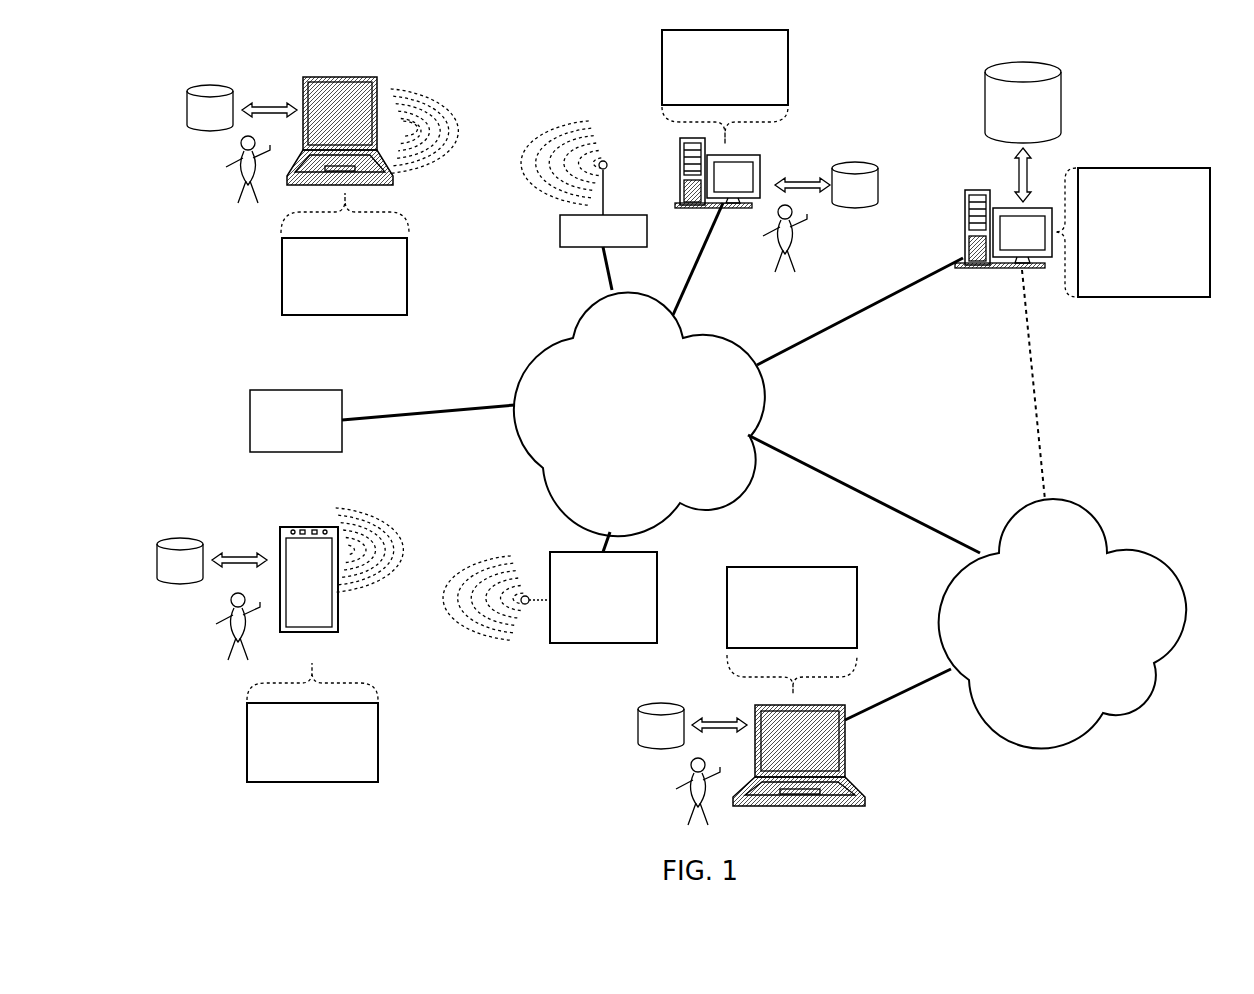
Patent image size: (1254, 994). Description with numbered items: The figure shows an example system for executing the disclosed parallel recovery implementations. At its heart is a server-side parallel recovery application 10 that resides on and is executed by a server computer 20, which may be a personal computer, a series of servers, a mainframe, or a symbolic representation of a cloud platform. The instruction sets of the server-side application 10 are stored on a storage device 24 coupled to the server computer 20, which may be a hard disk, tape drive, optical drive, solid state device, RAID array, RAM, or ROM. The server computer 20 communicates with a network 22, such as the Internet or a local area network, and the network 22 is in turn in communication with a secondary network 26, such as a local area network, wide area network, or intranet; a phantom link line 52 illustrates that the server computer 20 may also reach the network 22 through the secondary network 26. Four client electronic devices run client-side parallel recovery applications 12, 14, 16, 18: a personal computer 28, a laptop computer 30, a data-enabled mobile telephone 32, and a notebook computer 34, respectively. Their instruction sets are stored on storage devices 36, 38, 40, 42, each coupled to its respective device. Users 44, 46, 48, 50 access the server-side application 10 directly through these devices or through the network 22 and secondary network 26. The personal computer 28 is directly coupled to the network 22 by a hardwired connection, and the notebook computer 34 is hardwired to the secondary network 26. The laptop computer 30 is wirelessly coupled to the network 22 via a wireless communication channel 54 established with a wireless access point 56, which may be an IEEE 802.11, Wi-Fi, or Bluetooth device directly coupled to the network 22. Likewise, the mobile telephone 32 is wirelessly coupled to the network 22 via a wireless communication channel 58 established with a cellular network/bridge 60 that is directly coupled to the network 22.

The server-side parallel recovery application 10 is at (1211, 205).
The client-side parallel recovery application 12 is at (789, 84).
The client-side parallel recovery application 14 is at (408, 262).
The client-side parallel recovery application 16 is at (379, 720).
The client-side parallel recovery application 18 is at (858, 616).
The server computer 20 is at (962, 213).
The network 22 is at (639, 415).
The storage device 24 is at (1062, 82).
The network 26 is at (1062, 624).
The personal computer 28 is at (762, 172).
The laptop computer 30 is at (378, 96).
The data-enabled mobile telephone 32 is at (339, 583).
The notebook computer 34 is at (847, 750).
The storage device 36 is at (855, 185).
The storage device 38 is at (210, 108).
The storage device 40 is at (180, 561).
The storage device 42 is at (661, 726).
The user 44 is at (806, 220).
The user 46 is at (218, 160).
The user 48 is at (218, 608).
The user 50 is at (665, 783).
The phantom link line 52 is at (1034, 370).
The wireless communication channel 54 is at (510, 117).
The wireless access point 56 is at (559, 231).
The wireless communication channel 58 is at (445, 552).
The cellular network/bridge 60 is at (658, 565).